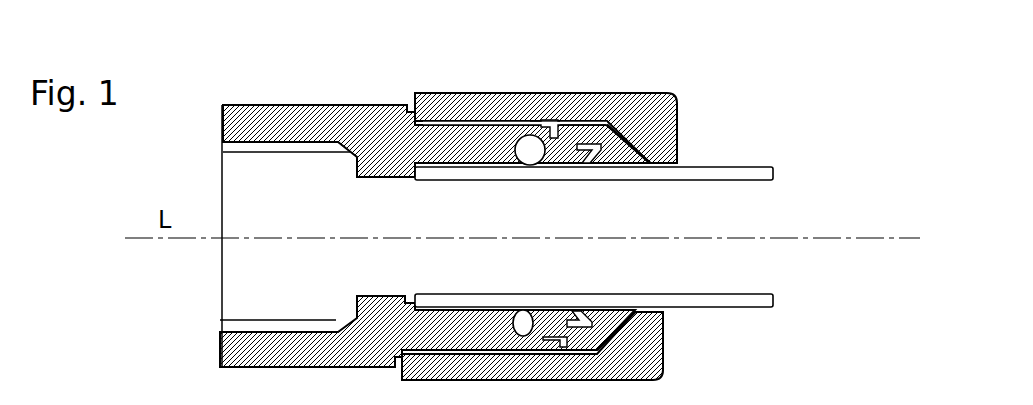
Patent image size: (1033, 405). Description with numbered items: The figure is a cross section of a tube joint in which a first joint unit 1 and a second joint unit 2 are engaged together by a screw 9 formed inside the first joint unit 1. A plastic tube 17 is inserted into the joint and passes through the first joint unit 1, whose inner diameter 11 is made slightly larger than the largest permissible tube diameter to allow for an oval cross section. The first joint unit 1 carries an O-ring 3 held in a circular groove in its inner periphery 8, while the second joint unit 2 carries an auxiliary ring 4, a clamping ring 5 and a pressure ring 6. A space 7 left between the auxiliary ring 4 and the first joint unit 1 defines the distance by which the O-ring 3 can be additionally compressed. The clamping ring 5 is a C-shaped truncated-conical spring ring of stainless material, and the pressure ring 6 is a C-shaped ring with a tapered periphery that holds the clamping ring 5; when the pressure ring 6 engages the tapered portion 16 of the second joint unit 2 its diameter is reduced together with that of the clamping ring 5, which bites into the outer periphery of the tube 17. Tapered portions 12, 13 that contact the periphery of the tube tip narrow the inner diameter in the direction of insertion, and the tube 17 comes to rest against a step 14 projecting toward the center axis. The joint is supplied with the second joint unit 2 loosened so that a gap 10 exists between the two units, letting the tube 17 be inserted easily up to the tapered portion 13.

The first joint unit 1 is at (356, 128).
The second joint unit 2 is at (650, 93).
The O-ring 3 is at (529, 166).
The auxiliary ring 4 is at (563, 163).
The clamping ring 5 is at (587, 162).
The pressure ring 6 is at (614, 135).
The space 7 is at (557, 119).
The inner periphery 8 is at (543, 118).
The screw 9 is at (503, 120).
The gap 10 is at (408, 100).
The inner diameter 11 is at (663, 165).
The tapered portion 12 is at (493, 165).
The tapered portion 13 is at (413, 167).
The step 14 is at (380, 178).
The tapered portion 16 is at (620, 160).
The plastic tube 17 is at (745, 172).